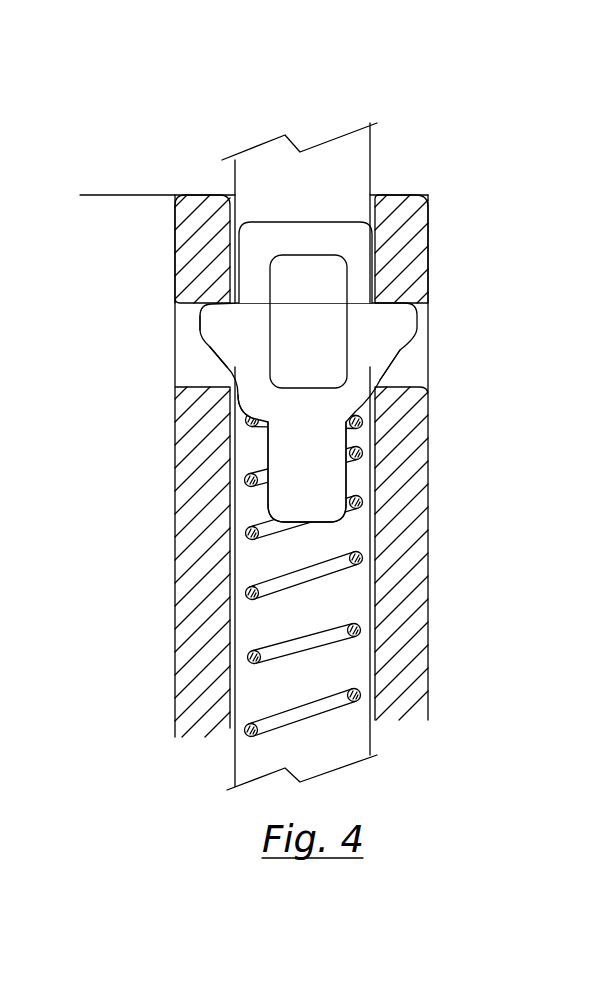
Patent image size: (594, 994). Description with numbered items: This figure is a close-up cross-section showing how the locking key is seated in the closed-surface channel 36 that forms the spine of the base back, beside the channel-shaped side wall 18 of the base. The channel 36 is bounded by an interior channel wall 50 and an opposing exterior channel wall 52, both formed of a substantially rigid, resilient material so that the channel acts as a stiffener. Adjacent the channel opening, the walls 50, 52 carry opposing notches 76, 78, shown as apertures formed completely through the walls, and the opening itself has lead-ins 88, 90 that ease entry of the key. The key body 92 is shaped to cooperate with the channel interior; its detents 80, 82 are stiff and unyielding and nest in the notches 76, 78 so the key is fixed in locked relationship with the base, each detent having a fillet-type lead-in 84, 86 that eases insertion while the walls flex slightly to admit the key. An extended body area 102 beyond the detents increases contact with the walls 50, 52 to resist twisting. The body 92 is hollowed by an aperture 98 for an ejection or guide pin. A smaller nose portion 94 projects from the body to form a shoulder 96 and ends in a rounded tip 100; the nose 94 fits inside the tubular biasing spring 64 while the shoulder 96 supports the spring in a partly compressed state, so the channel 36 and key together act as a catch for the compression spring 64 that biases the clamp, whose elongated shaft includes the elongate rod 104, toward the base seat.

The channel-shaped side wall 18 is at (110, 193).
The closed-surface channel 36 is at (503, 444).
The interior channel wall 50 is at (177, 622).
The exterior channel wall 52 is at (428, 492).
The biasing spring 64 is at (330, 638).
The notch 76 is at (148, 312).
The notch 78 is at (449, 349).
The detent 80 is at (199, 323).
The detent 82 is at (418, 325).
The lead-in 84 is at (215, 354).
The lead-in 86 is at (382, 362).
The lead-in 88 is at (222, 195).
The lead-in 90 is at (382, 195).
The key body 92 is at (373, 321).
The nose portion 94 is at (318, 480).
The shoulder 96 is at (215, 445).
The aperture 98 is at (295, 297).
The tip 100 is at (326, 522).
The extended body area 102 is at (363, 250).
The elongate rod 104 is at (370, 143).